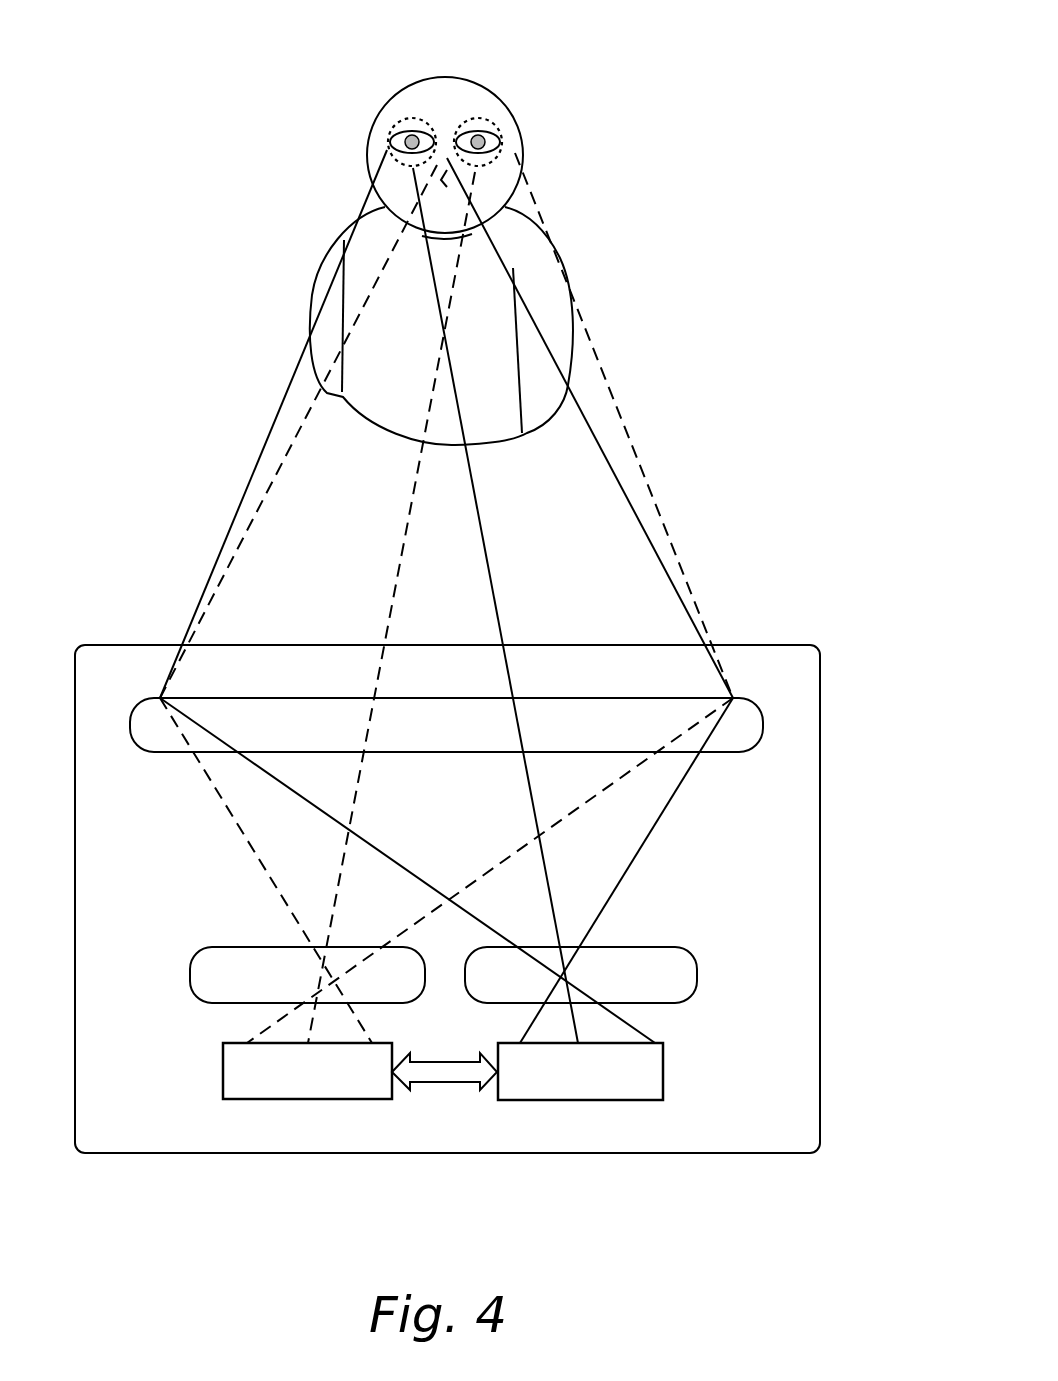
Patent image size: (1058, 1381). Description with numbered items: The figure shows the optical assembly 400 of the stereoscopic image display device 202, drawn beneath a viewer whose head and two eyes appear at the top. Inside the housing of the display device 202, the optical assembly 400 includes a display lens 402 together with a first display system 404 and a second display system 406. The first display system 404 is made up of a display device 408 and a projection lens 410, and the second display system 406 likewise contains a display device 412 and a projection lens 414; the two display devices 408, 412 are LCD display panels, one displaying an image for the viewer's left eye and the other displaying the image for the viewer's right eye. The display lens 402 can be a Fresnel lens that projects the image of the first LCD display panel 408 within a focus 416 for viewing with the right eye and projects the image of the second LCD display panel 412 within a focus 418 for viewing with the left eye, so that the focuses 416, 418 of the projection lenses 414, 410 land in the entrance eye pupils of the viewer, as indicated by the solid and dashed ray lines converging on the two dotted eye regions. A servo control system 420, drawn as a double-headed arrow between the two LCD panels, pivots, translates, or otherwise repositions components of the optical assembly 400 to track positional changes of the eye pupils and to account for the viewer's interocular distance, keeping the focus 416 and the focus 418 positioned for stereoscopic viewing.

The optical assembly 400 is at (710, 187).
The stereoscopic image display device 202 is at (763, 644).
The display lens 402 is at (663, 698).
The first display system 404 is at (207, 1032).
The second display system 406 is at (683, 1028).
The display device 408 is at (302, 1100).
The projection lens 410 is at (233, 947).
The display device 412 is at (627, 1100).
The projection lens 414 is at (650, 947).
The focus 416 is at (392, 123).
The focus 418 is at (470, 118).
The servo control system 420 is at (447, 1083).